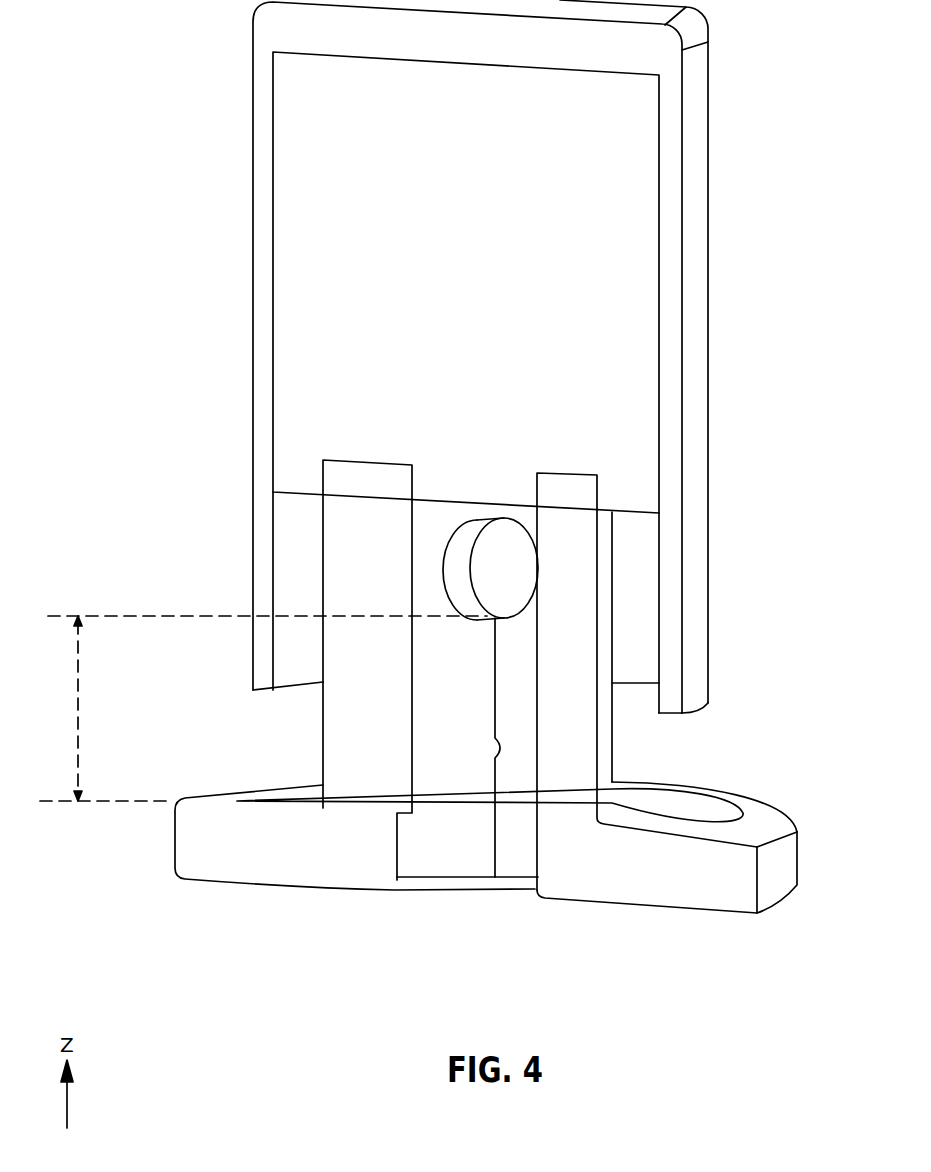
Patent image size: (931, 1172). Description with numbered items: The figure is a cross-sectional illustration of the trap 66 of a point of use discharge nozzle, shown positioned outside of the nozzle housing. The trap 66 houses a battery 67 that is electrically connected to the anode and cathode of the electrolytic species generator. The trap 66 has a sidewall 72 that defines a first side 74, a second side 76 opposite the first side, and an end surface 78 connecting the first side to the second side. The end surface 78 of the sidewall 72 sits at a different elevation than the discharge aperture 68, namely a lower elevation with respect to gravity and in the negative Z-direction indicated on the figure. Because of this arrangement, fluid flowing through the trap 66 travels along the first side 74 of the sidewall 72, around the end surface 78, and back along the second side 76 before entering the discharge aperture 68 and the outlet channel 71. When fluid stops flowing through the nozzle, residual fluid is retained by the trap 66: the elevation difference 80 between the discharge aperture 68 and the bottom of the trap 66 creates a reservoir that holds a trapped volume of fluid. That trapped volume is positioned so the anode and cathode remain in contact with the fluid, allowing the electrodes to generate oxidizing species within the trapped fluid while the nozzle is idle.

The trap 66 is at (708, 158).
The battery 67 is at (460, 281).
The discharge aperture 68 is at (497, 567).
The outlet channel 71 is at (515, 747).
The sidewall 72 is at (242, 528).
The first side 74 is at (690, 635).
The second side 76 is at (637, 668).
The end surface 78 is at (685, 714).
The elevation difference 80 is at (263, 708).